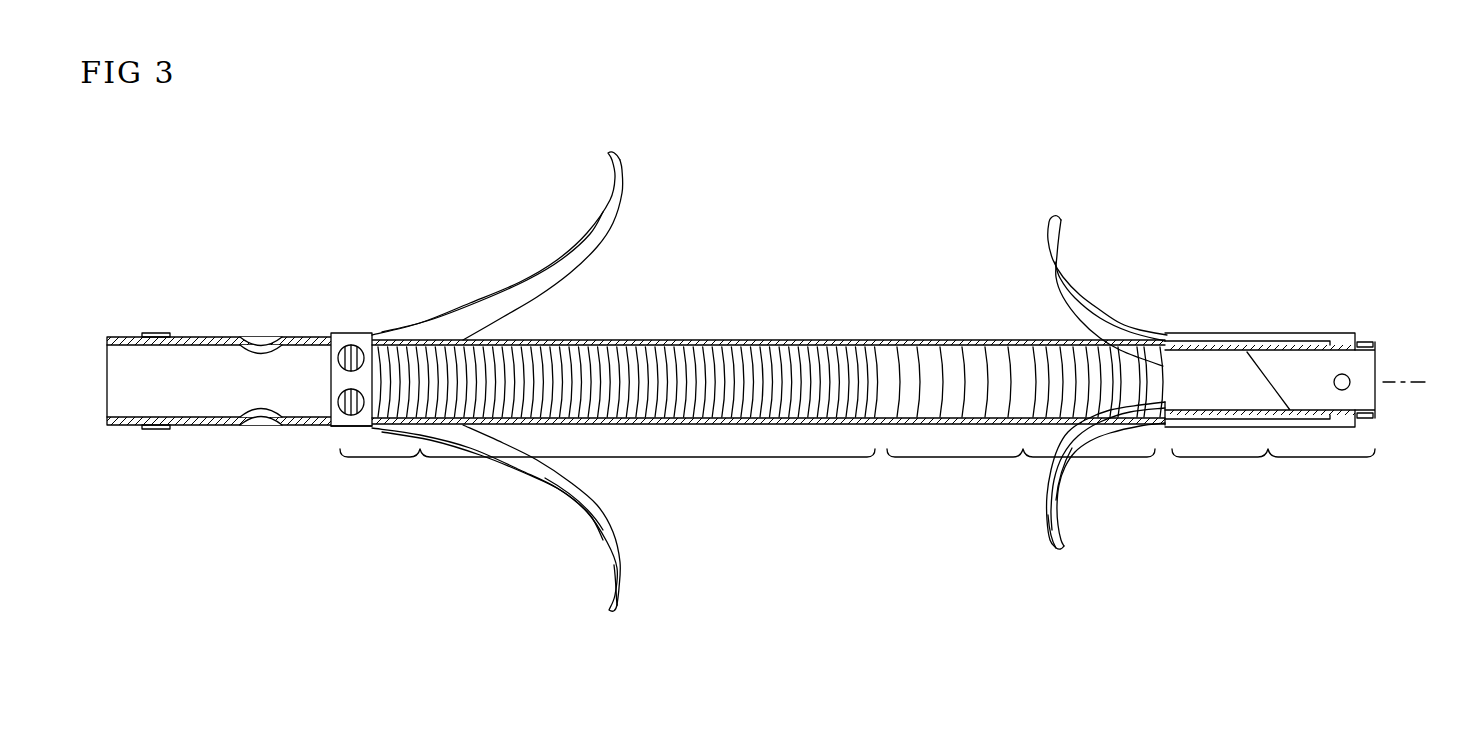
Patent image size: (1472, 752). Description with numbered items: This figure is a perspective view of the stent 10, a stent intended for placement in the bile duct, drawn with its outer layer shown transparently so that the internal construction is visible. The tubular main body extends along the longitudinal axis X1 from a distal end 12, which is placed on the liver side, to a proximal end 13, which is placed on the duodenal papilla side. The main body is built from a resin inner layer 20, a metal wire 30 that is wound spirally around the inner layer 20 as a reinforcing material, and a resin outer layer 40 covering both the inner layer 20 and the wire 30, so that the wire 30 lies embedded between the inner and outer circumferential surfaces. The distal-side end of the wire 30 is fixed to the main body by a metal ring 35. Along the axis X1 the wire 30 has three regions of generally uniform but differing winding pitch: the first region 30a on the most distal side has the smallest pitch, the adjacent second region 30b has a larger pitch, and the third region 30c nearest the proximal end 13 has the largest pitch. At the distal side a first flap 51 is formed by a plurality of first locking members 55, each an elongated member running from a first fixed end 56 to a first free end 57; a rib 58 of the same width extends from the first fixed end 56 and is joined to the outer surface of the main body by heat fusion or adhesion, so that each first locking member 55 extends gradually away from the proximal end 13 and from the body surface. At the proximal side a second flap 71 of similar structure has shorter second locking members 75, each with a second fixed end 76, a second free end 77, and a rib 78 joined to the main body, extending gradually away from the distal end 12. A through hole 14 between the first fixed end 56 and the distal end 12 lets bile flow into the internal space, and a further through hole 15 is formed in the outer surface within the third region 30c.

The stent 10 is at (1183, 288).
The distal end 12 is at (106, 334).
The proximal end 13 is at (1381, 427).
The through hole 14 is at (262, 414).
The through hole 15 is at (1350, 380).
The inner layer 20 is at (190, 396).
The wire 30 is at (940, 375).
The first region 30a is at (420, 450).
The second region 30b is at (1023, 450).
The third region 30c is at (1268, 450).
The metal ring 35 is at (338, 372).
The outer layer 40 is at (767, 340).
The first flap 51 is at (565, 515).
The first locking member 55 is at (557, 263).
The first fixed end 56 is at (340, 428).
The first free end 57 is at (607, 610).
The rib 58 is at (178, 340).
The second flap 71 is at (1068, 520).
The second locking member 75 is at (1085, 307).
The second fixed end 76 is at (1165, 422).
The second free end 77 is at (1050, 545).
The rib 78 is at (1303, 337).
The longitudinal axis X1 is at (1423, 383).